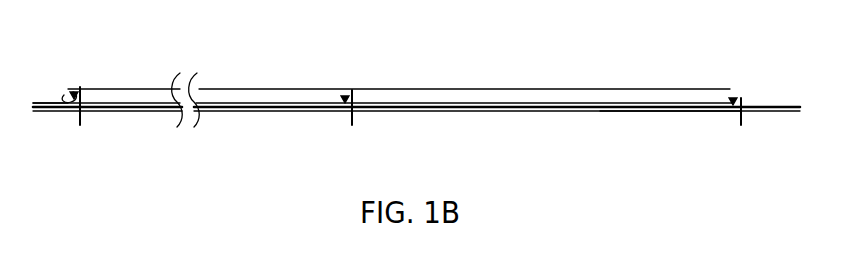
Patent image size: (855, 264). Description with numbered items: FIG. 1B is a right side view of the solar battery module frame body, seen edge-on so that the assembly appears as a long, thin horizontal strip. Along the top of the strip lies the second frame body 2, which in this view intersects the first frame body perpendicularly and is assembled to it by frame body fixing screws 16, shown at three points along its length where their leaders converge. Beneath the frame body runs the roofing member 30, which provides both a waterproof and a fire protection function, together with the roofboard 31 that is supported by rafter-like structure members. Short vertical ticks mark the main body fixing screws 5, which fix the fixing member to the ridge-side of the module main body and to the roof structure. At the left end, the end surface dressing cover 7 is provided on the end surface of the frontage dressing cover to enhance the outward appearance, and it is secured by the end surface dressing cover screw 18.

The roofing member 30 is at (760, 105).
The second frame body 2 is at (232, 97).
The main body fixing screw 5 is at (81, 124).
The frame body fixing screw 16 is at (75, 94).
The end surface dressing cover screw 18 is at (73, 95).
The end surface dressing cover 7 is at (63, 112).
The roofboard 31 is at (640, 112).